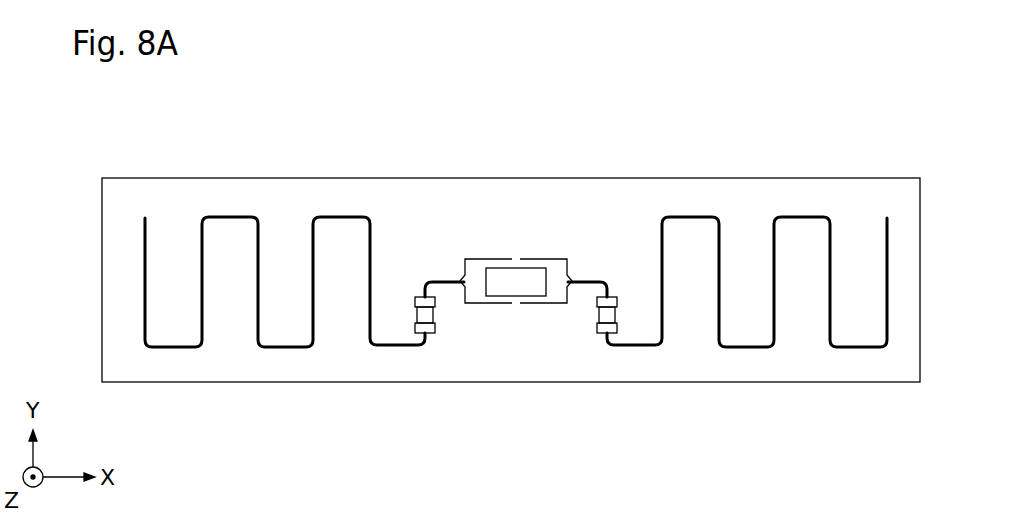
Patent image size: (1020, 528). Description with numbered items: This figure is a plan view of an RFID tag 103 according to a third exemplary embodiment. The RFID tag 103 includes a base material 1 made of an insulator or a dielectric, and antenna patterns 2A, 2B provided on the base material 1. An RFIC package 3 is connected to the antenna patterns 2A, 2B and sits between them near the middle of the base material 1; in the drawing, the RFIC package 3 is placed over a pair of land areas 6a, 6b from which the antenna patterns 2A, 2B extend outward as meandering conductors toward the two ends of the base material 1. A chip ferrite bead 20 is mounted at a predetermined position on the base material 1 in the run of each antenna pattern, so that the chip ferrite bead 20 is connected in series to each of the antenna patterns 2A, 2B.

The RFID tag 103 is at (760, 59).
The base material 1 is at (545, 203).
The antenna pattern 2A is at (371, 217).
The antenna pattern 2B is at (661, 217).
The RFIC package 3 is at (517, 277).
The first land electrode 6a is at (472, 298).
The second land electrode 6b is at (560, 298).
The chip ferrite bead 20 is at (420, 318).